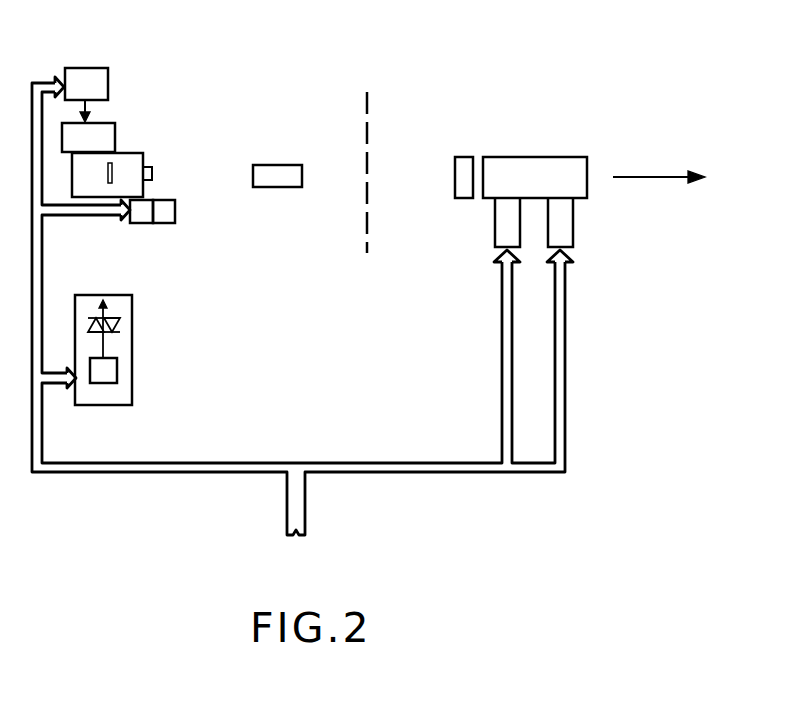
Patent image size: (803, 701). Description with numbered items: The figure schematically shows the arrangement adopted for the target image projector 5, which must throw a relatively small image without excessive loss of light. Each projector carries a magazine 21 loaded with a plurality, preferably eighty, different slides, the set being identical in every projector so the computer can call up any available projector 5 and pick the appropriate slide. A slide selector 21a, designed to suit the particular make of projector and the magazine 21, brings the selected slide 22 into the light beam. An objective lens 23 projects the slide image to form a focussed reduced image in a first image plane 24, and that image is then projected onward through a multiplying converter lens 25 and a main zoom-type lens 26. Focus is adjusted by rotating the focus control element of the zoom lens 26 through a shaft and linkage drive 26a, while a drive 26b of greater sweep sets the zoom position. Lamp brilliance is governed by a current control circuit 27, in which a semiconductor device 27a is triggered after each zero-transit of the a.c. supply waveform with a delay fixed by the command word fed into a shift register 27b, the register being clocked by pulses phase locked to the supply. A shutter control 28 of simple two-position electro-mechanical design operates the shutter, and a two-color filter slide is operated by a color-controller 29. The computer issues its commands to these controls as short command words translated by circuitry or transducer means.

The target image projector 5 is at (355, 33).
The slide selector 21a is at (90, 75).
The magazine 21 is at (97, 137).
The selected slide 22 is at (118, 175).
The objective lens 23 is at (275, 170).
The first image plane 24 is at (370, 113).
The multiplying converter lens 25 is at (461, 163).
The main zoom-type lens 26 is at (570, 167).
The shaft and linkage drive 26a is at (498, 232).
The drive of greater sweep 26b is at (567, 233).
The current control circuit 27 is at (132, 305).
The semiconductor device 27a is at (108, 333).
The shift register 27b is at (108, 371).
The shutter control 28 is at (137, 224).
The color-controller 29 is at (162, 224).